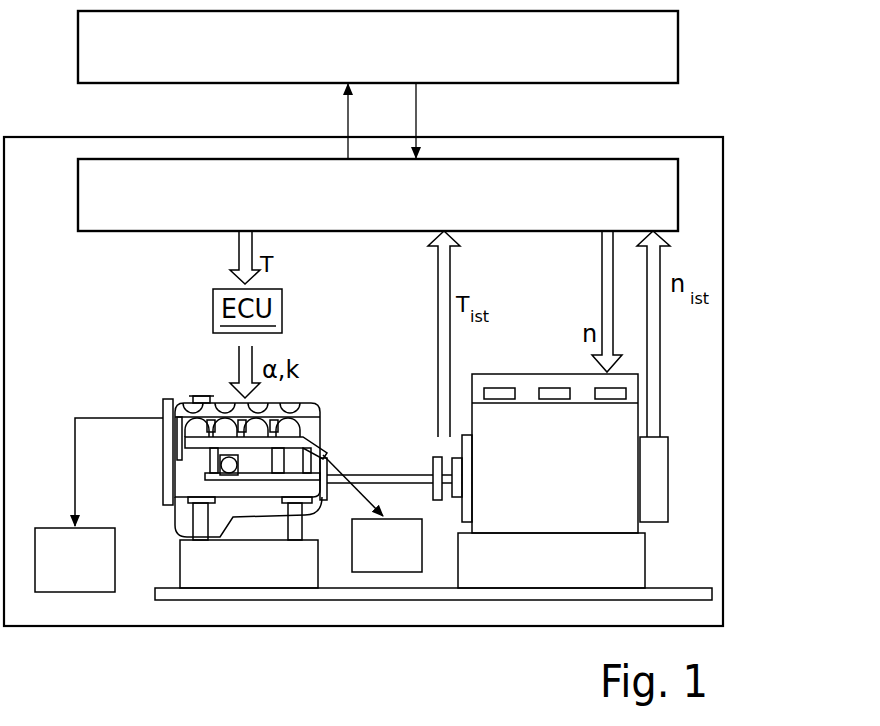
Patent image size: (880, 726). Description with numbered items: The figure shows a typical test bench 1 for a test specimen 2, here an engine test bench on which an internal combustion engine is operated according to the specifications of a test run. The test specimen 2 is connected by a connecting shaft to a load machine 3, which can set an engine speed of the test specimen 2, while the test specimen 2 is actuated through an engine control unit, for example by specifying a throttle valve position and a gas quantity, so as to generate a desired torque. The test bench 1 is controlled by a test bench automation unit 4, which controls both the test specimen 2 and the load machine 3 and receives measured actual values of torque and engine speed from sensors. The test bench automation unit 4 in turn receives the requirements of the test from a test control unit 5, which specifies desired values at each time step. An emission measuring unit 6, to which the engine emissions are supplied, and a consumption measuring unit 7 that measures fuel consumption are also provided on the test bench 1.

The test bench 1 is at (768, 100).
The test specimen 2 is at (168, 535).
The load machine 3 is at (661, 525).
The test bench automation unit 4 is at (403, 204).
The test control unit 5 is at (394, 56).
The emission measuring unit 6 is at (402, 557).
The consumption measuring unit 7 is at (92, 572).